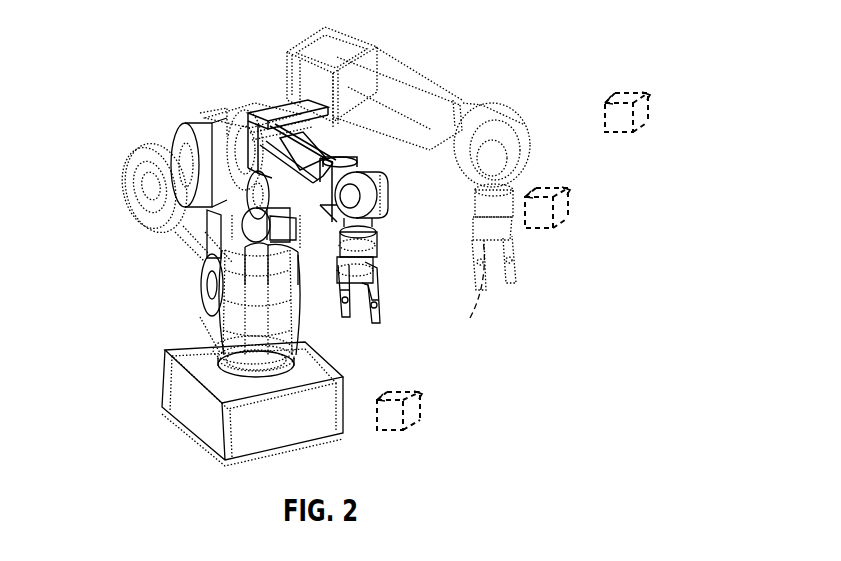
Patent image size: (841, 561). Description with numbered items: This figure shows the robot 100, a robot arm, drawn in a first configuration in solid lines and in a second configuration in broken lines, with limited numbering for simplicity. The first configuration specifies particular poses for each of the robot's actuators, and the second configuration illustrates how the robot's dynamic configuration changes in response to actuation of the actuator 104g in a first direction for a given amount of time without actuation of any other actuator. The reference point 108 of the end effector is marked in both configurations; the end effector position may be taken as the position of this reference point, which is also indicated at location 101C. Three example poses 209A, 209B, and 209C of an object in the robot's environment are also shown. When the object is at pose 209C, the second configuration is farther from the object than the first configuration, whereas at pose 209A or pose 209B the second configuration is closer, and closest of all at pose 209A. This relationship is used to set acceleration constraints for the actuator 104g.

The robot 100 is at (208, 60).
The actuator 104g is at (230, 355).
The reference point 108 is at (347, 275).
The end effector position 101C is at (439, 291).
The pose 209A is at (560, 208).
The pose 209B is at (640, 113).
The pose 209C is at (412, 410).